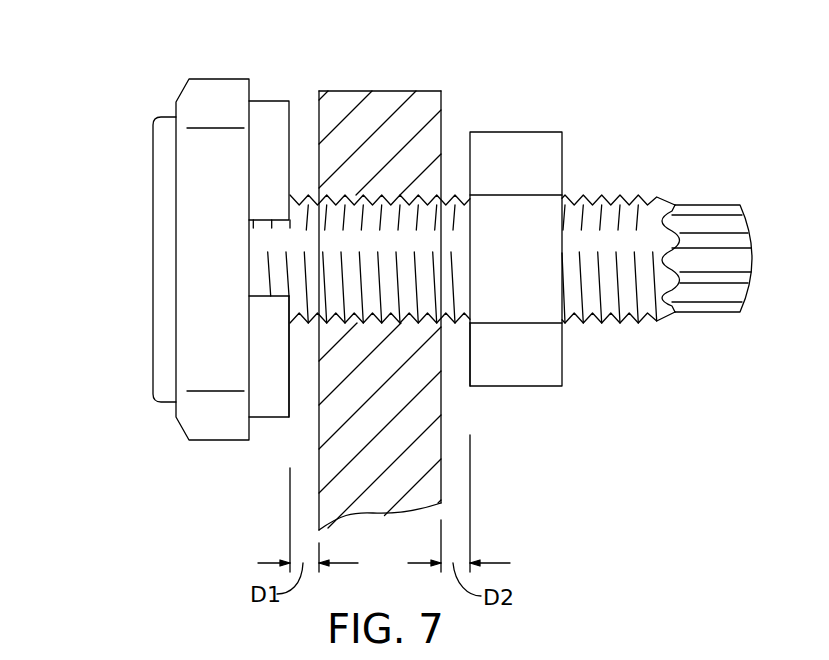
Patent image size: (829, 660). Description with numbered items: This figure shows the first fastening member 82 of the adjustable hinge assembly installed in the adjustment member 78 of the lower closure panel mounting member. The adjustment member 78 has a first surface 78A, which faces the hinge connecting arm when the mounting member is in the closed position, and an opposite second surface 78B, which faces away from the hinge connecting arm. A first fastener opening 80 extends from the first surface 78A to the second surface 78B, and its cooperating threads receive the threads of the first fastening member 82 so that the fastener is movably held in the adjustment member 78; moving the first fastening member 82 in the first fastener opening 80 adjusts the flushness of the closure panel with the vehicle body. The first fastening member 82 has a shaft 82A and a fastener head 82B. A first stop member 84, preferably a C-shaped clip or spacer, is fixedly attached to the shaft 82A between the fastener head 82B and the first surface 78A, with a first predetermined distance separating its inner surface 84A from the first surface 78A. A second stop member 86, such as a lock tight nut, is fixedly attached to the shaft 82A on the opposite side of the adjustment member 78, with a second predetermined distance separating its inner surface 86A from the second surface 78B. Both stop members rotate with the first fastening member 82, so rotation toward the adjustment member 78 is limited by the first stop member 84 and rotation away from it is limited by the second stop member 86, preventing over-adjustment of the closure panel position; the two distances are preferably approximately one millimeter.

The adjustment member 78 is at (390, 276).
The first surface 78A is at (319, 114).
The second surface 78B is at (442, 123).
The first fastener opening 80 is at (412, 314).
The first fastening member 82 is at (152, 176).
The shaft 82A is at (608, 323).
The fastener head 82B is at (219, 79).
The first stop member 84 is at (266, 101).
The inner surface 84A is at (290, 394).
The second stop member 86 is at (524, 132).
The inner surface 86A is at (468, 361).